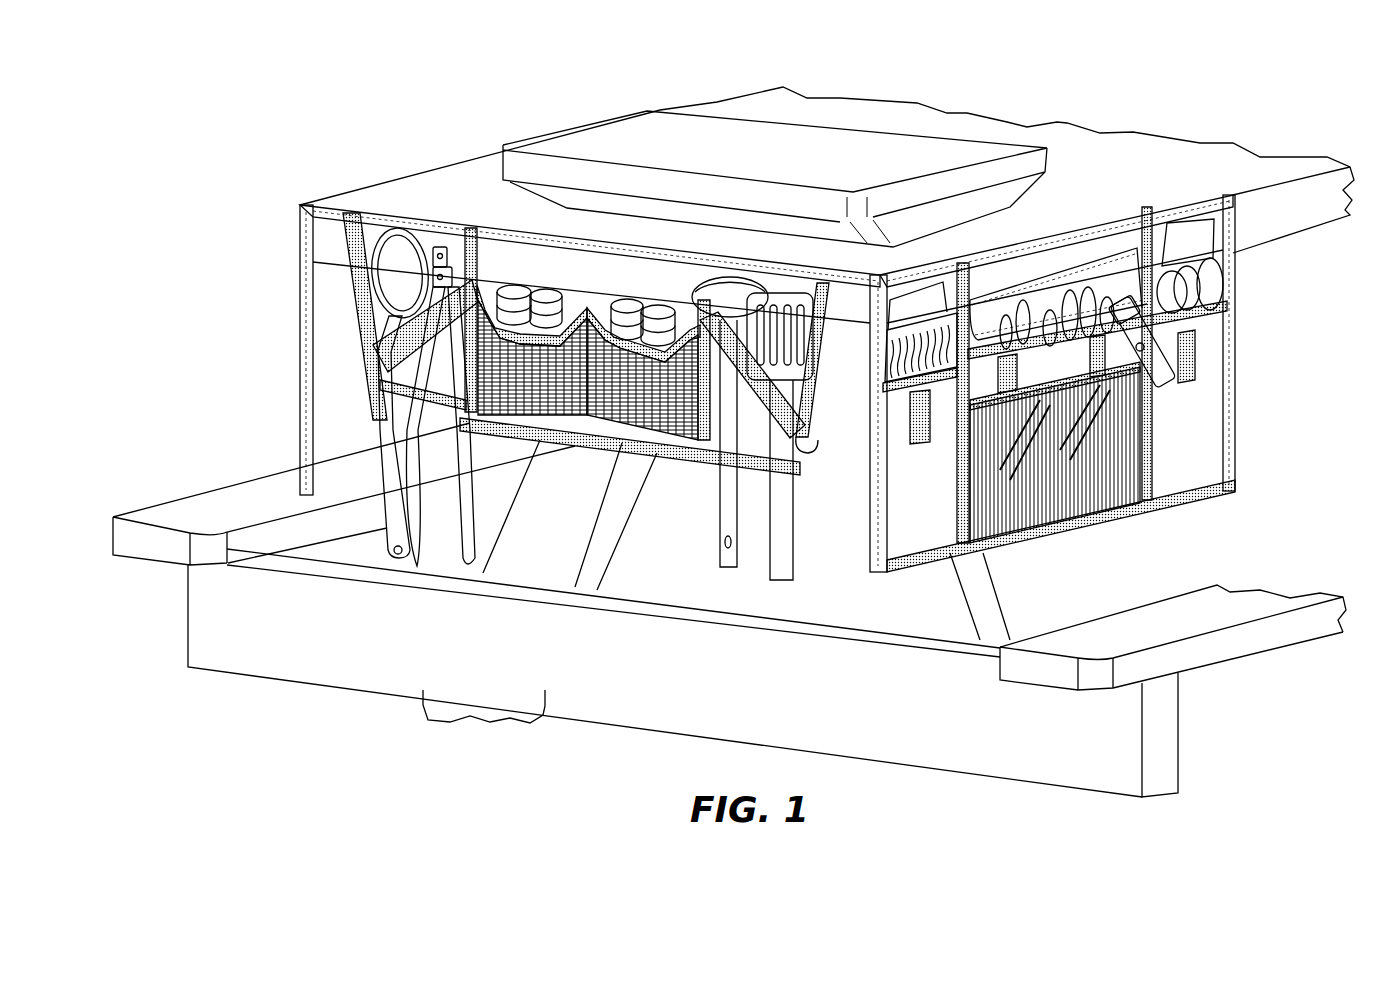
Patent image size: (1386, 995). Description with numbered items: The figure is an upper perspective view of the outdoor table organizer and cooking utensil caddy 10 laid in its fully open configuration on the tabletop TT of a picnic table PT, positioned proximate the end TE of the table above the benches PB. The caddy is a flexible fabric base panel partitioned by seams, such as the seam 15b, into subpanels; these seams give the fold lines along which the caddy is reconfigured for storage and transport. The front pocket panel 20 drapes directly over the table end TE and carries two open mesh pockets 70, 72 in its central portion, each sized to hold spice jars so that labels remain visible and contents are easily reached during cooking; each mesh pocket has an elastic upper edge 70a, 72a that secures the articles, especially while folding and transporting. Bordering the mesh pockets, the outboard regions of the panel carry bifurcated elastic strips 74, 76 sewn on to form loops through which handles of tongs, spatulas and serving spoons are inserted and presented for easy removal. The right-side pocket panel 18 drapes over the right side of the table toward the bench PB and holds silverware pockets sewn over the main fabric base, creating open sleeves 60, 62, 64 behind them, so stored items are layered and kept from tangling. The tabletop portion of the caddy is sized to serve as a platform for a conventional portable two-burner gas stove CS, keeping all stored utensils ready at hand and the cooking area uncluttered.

The outdoor table organizer 10 is at (1246, 118).
The seam between subpanels 15b is at (913, 262).
The right-side pocket panel 18 is at (887, 483).
The front pocket panel 20 is at (362, 272).
The open sleeve 60 is at (933, 316).
The open sleeve 62 is at (1203, 250).
The open sleeve 64 is at (1110, 246).
The open mesh pocket 70 is at (510, 440).
The elastic upper edge 70a is at (510, 290).
The open mesh pocket 72 is at (620, 447).
The elastic upper edge 72a is at (628, 300).
The strap 74 is at (374, 360).
The utensil loop strap 76 is at (763, 443).
The cooler CS is at (532, 147).
The tabletop TT is at (1262, 224).
The end of the picnic table TE is at (317, 237).
The picnic table bench PB is at (1235, 602).
The picnic table PT is at (925, 738).